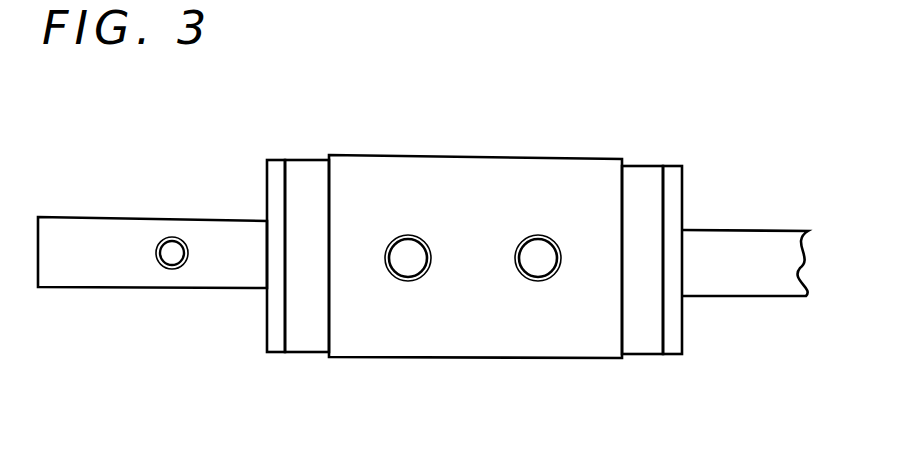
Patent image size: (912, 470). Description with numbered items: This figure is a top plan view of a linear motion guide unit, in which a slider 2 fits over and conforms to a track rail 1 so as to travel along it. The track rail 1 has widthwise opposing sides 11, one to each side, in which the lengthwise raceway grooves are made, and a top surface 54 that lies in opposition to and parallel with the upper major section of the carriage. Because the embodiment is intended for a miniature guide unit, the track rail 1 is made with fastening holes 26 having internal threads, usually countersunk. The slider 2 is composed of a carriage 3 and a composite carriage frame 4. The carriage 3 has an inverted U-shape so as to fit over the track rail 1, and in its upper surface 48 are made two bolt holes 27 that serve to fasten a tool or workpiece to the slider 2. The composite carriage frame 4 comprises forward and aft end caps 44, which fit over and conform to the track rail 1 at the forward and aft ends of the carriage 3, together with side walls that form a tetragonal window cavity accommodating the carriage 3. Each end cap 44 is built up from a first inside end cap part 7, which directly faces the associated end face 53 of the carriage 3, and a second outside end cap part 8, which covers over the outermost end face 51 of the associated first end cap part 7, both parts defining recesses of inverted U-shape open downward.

The track rail 1 is at (152, 242).
The slider 2 is at (475, 241).
The carriage 3 is at (470, 332).
The composite carriage frame 4 is at (476, 256).
The first inside end cap part 7 is at (306, 332).
The second outside end cap part 8 is at (277, 183).
The side 11 is at (168, 219).
The fastening hole 26 is at (170, 262).
The bolt hole 27 is at (427, 262).
The end cap 44 is at (276, 360).
The upper surface 48 is at (440, 296).
The end face 51 is at (283, 253).
The end face 53 is at (329, 213).
The top surface 54 is at (120, 265).